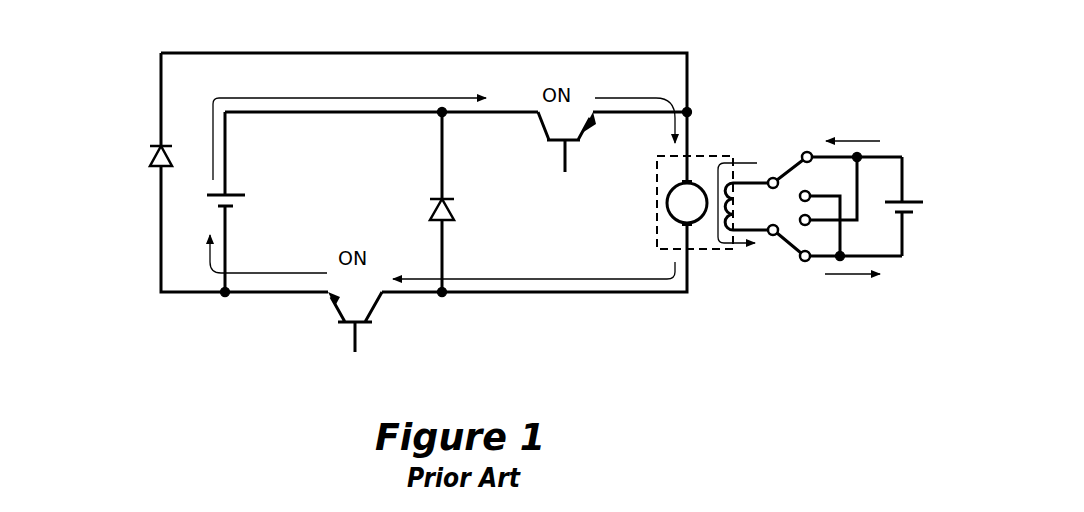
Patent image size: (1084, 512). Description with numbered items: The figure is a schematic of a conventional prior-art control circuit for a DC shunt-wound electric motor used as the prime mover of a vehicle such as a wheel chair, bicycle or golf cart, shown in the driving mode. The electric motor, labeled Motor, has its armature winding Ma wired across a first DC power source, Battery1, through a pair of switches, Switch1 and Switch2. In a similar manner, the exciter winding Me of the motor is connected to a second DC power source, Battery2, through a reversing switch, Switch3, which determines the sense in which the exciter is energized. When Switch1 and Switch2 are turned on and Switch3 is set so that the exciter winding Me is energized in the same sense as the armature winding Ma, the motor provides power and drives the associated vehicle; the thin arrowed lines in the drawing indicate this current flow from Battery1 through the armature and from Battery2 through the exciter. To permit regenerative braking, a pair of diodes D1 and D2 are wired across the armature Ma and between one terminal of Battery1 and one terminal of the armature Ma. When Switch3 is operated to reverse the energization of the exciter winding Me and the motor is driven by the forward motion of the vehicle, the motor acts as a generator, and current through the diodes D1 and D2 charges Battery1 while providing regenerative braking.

The diode D2 is at (150, 157).
The diode D1 is at (452, 216).
The first DC power source Battery1 is at (237, 191).
The second DC power source Battery2 is at (913, 200).
The switch Switch1 is at (580, 152).
The switch Switch2 is at (363, 330).
The reversing switch Switch3 is at (790, 160).
The electric motor Motor is at (672, 226).
The armature winding Ma is at (705, 252).
The exciter winding Me is at (746, 178).